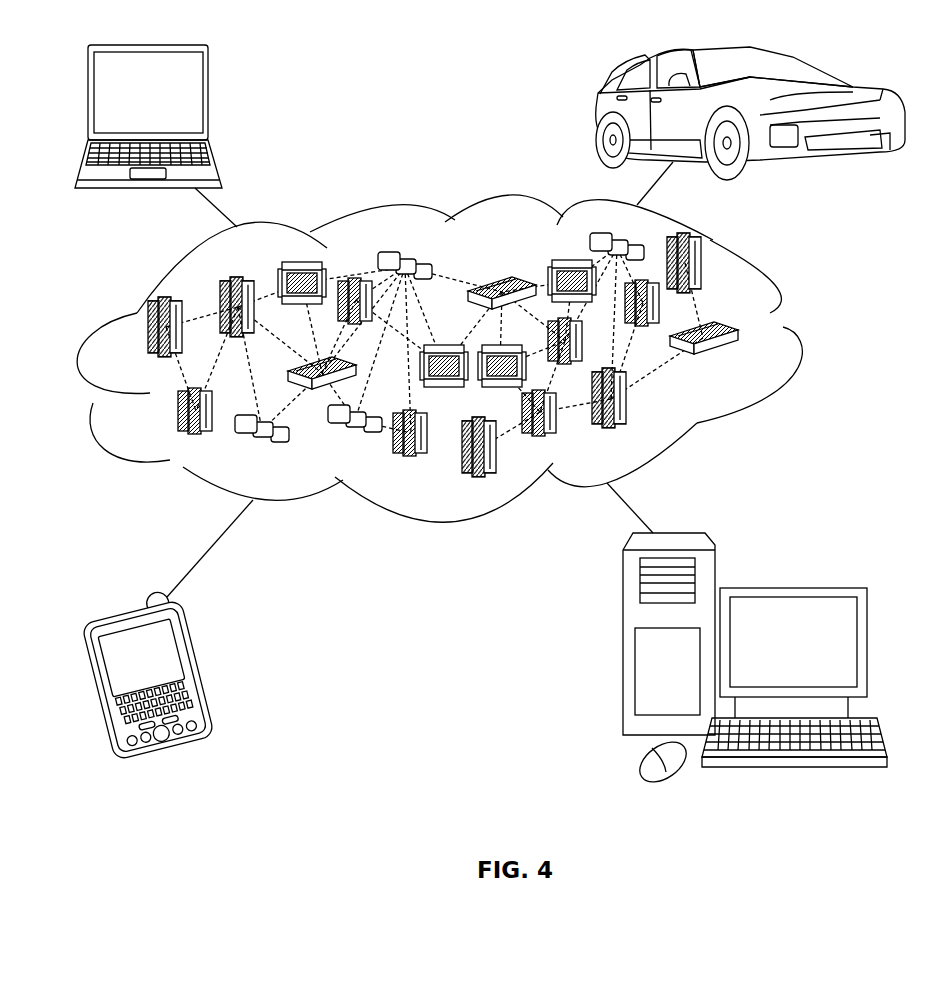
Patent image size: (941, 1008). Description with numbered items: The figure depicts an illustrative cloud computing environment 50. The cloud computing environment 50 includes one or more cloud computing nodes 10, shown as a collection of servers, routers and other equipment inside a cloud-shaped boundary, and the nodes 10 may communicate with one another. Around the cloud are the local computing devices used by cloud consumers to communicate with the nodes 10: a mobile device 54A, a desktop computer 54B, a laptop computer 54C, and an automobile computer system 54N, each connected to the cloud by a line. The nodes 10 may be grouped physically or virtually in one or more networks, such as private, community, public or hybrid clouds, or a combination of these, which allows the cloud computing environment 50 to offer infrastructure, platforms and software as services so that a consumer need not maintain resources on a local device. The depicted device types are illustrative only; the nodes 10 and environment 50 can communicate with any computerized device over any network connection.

The cloud computing environment 50 is at (792, 337).
The cloud computing node 10 is at (746, 365).
The mobile device 54A is at (199, 667).
The desktop computer 54B is at (788, 585).
The laptop computer 54C is at (208, 99).
The automobile computer system 54N is at (596, 118).